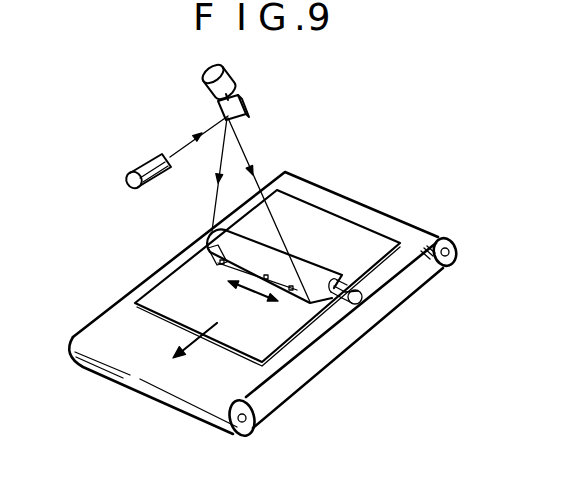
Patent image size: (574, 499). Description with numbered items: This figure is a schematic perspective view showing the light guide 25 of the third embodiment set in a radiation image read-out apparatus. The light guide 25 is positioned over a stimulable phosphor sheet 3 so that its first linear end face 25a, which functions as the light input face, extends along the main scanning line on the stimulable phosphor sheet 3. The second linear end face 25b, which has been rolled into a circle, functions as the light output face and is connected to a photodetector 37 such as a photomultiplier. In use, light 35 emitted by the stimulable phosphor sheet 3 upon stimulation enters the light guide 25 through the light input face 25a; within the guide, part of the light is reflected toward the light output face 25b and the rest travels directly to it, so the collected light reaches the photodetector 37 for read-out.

The stimulable phosphor sheet 3 is at (155, 288).
The light guide 25 is at (322, 259).
The first linear end face 25a is at (219, 256).
The second linear end face 25b is at (338, 283).
The light 35 is at (306, 302).
The photodetector 37 is at (360, 300).